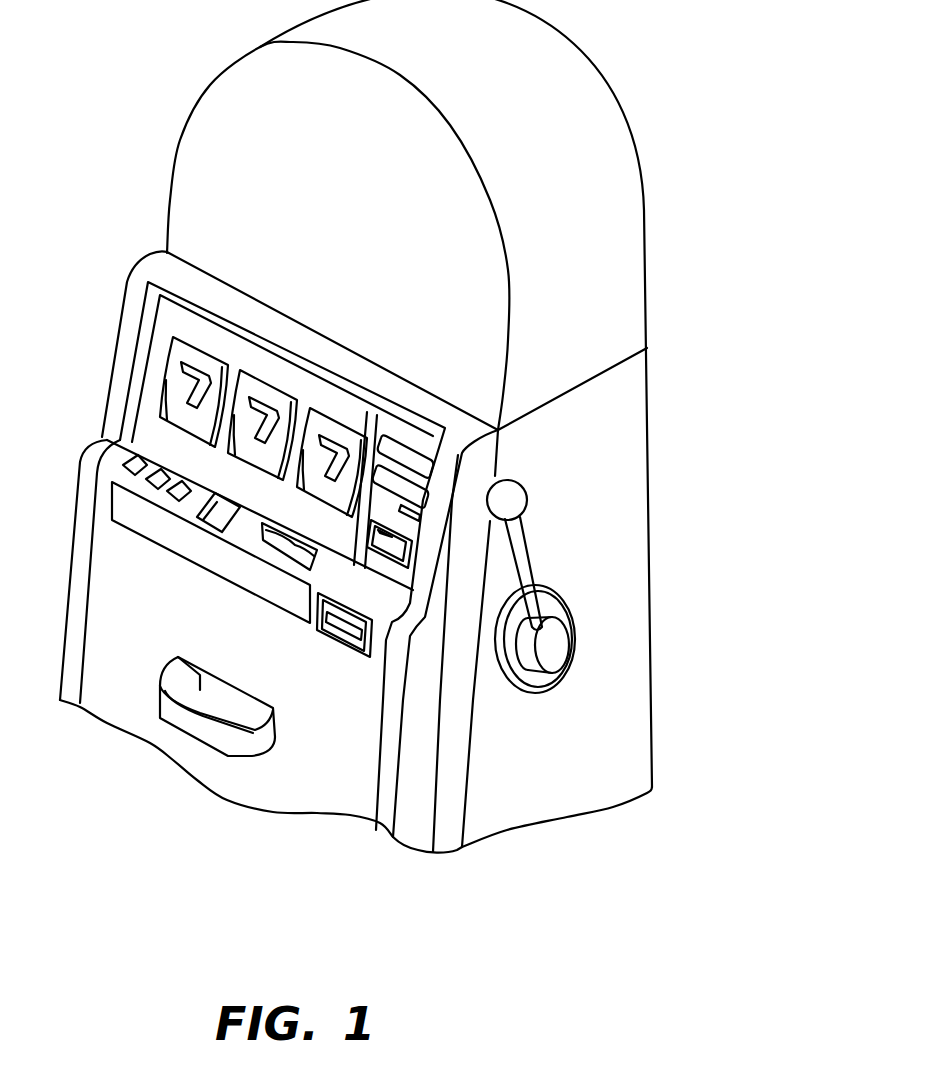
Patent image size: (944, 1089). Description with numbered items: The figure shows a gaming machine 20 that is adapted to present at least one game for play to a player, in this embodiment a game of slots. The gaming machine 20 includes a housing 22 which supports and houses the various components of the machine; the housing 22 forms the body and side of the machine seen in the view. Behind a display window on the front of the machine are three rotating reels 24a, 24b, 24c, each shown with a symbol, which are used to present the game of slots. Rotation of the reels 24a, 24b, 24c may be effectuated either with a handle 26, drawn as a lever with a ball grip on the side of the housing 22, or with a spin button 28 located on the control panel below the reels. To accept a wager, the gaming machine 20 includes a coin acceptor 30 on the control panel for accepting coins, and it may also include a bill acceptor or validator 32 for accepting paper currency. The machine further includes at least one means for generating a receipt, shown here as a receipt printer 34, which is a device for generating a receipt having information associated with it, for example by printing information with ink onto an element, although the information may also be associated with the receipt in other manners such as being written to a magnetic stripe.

The gaming machine 20 is at (722, 409).
The housing 22 is at (630, 695).
The rotating reel 24a is at (203, 350).
The rotating reel 24b is at (270, 387).
The rotating reel 24c is at (348, 420).
The handle 26 is at (537, 570).
The spin button 28 is at (213, 518).
The coin acceptor 30 is at (280, 550).
The bill acceptor 32 is at (413, 535).
The receipt printer 34 is at (337, 640).